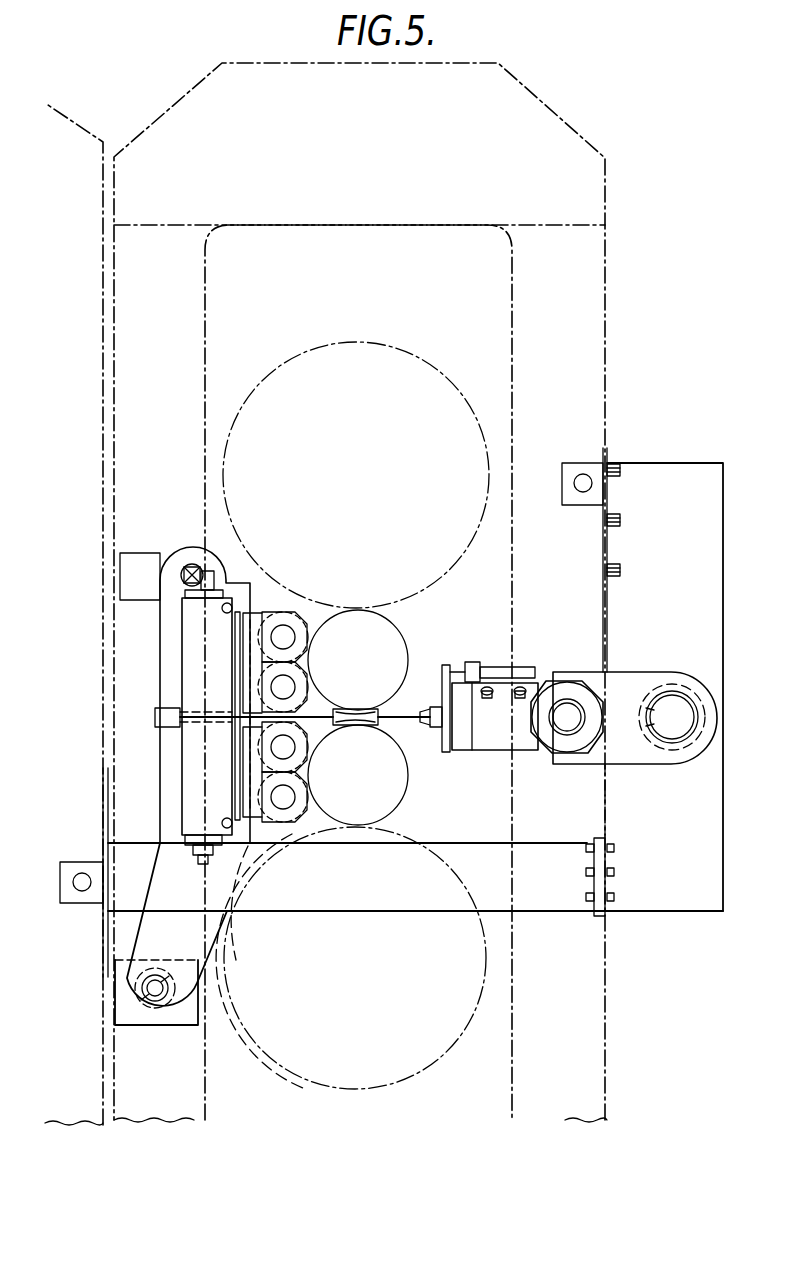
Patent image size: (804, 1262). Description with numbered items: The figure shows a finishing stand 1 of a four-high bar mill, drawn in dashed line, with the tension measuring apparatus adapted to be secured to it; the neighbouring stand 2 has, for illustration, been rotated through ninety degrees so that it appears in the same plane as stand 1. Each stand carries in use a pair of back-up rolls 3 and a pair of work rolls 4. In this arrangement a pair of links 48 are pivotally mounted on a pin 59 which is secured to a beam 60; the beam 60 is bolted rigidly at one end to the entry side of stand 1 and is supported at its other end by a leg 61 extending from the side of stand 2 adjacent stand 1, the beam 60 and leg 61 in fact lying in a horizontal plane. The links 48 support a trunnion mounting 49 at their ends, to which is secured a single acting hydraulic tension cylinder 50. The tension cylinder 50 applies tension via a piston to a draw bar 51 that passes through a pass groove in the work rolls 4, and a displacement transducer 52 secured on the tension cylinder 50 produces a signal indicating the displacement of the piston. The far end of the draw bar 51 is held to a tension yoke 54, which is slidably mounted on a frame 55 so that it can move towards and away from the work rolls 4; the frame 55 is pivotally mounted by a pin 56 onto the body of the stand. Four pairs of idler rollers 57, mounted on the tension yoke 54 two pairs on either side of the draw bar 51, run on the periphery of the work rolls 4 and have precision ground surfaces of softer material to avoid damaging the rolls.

The stand 1 is at (530, 120).
The stand 2 is at (82, 152).
The back-up rolls 3 is at (470, 428).
The work rolls 4 is at (380, 625).
The links 48 is at (632, 745).
The trunnion mounting 49 is at (562, 725).
The tension cylinder 50 is at (508, 727).
The draw bar 51 is at (395, 723).
The displacement transducer 52 is at (500, 673).
The tension yoke 54 is at (190, 757).
The frame 55 is at (170, 932).
The pin 56 is at (148, 988).
The idler rollers 57 is at (263, 687).
The pin 59 is at (672, 727).
The beam 60 is at (640, 475).
The leg 61 is at (297, 905).